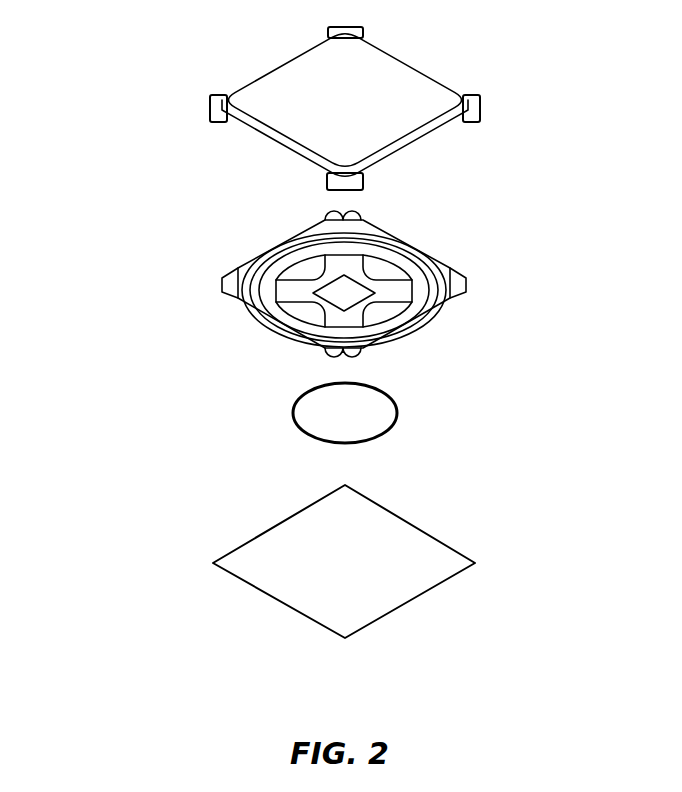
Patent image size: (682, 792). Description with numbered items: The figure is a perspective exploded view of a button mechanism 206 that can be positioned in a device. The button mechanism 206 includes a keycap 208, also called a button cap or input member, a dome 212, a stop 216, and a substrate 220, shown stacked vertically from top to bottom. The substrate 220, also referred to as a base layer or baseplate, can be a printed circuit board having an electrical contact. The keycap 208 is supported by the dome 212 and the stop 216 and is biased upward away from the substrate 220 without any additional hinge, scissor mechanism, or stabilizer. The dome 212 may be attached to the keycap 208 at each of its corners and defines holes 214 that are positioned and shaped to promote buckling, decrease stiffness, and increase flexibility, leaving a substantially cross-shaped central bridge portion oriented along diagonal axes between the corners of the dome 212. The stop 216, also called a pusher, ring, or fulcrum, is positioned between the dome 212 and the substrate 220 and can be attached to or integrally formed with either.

The button mechanism 206 is at (125, 158).
The keycap 208 is at (427, 95).
The dome 212 is at (425, 265).
The holes 214 is at (307, 272).
The stop 216 is at (392, 396).
The substrate 220 is at (427, 558).